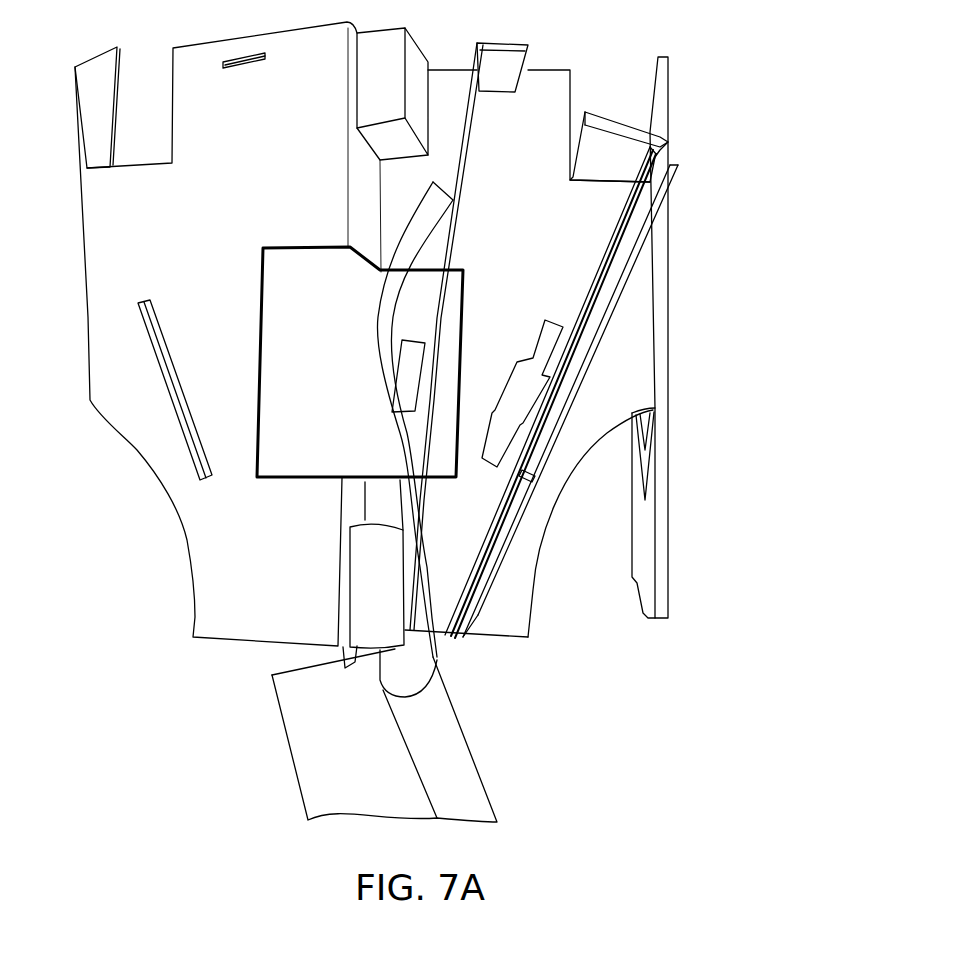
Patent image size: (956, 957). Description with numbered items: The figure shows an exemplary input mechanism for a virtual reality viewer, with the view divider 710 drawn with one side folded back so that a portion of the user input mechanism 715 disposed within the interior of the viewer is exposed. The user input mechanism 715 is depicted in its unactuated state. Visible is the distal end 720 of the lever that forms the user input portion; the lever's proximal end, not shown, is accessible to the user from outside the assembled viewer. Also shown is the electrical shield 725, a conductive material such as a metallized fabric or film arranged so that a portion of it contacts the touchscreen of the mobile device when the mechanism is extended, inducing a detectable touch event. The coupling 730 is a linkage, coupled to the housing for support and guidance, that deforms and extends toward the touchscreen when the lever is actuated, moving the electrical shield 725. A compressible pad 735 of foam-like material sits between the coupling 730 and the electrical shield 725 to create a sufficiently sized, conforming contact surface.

The view divider 710 is at (192, 236).
The user input mechanism 715 is at (748, 101).
The distal end of lever 720 is at (606, 105).
The electrical shield 725 is at (350, 330).
The coupling 730 is at (466, 289).
The compressible pad 735 is at (412, 425).